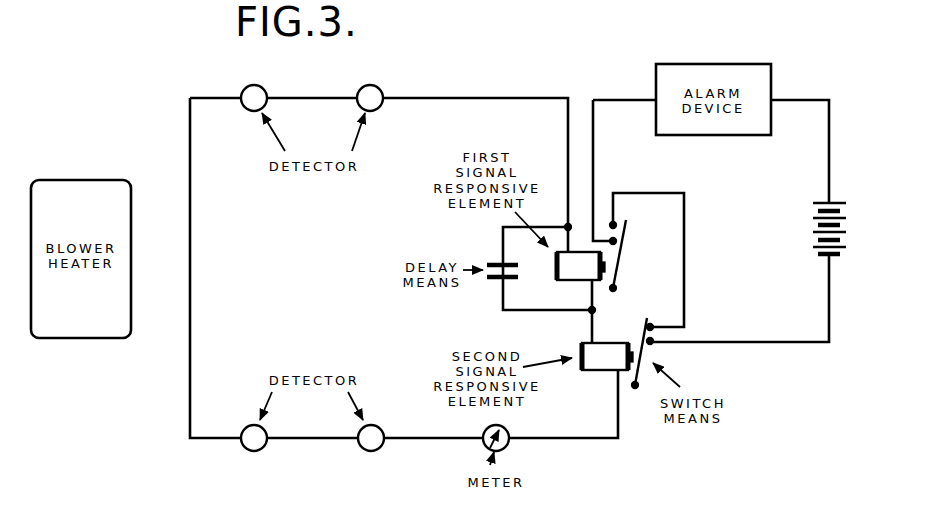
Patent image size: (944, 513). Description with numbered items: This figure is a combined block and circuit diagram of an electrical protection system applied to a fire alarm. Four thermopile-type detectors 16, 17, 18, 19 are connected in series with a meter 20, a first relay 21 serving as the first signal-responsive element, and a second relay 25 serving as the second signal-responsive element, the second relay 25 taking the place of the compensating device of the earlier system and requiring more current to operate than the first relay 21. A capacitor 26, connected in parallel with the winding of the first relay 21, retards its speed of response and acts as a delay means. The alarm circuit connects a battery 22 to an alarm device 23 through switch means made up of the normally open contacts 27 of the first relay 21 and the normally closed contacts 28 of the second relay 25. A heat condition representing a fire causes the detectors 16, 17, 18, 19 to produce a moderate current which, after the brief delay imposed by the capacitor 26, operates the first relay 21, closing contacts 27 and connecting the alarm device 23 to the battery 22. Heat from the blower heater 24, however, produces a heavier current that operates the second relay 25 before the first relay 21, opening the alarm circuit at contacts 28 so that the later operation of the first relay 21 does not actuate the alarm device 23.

The thermopile-type detector 16 is at (255, 452).
The thermopile-type detector 17 is at (371, 452).
The thermopile-type detector 18 is at (248, 107).
The thermopile-type detector 19 is at (378, 106).
The meter 20 is at (507, 446).
The relay (first signal-responsive element) 21 is at (573, 272).
The battery 22 is at (815, 225).
The alarm device 23 is at (711, 69).
The blower heater 24 is at (81, 185).
The relay (second signal-responsive element) 25 is at (598, 365).
The capacitor 26 is at (492, 284).
The normally open contacts 27 is at (602, 228).
The normally closed contacts 28 is at (662, 334).